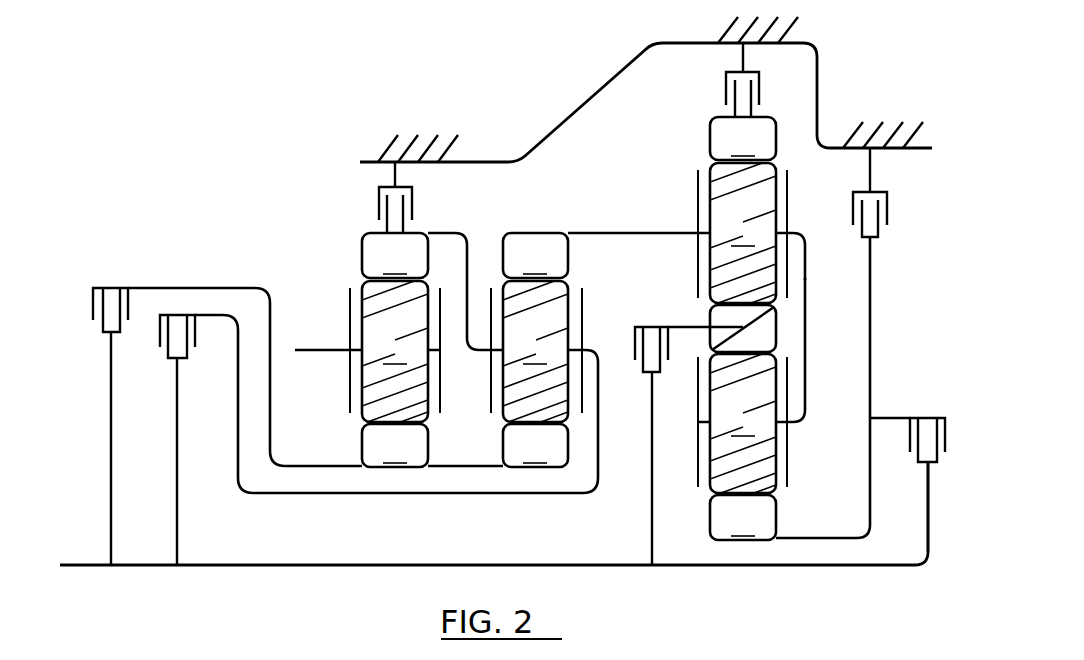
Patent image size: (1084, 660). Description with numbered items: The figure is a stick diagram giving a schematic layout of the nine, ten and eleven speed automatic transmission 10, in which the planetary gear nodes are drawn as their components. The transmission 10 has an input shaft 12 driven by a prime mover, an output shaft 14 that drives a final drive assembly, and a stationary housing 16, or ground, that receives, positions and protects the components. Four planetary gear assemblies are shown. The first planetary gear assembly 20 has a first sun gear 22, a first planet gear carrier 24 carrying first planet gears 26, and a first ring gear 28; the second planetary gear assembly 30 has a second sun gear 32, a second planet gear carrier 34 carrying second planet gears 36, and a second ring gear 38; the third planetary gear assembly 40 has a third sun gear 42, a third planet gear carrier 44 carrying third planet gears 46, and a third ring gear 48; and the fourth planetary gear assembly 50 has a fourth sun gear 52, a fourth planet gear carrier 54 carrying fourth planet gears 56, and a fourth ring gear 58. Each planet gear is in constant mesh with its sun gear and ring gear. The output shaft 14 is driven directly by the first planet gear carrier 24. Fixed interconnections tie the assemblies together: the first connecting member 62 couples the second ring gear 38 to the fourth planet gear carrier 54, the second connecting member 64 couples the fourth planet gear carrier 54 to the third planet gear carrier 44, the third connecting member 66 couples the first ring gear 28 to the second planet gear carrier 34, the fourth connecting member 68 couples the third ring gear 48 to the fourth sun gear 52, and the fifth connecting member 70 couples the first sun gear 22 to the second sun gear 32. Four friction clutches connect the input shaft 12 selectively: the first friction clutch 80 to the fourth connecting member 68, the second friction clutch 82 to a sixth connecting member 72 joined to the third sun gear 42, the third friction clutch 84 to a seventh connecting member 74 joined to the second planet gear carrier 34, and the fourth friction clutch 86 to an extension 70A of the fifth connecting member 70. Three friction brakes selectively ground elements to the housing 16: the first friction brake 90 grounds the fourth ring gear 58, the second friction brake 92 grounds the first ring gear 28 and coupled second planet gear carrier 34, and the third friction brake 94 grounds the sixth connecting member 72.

The automatic transmission 10 is at (226, 196).
The input shaft 12 is at (89, 569).
The output shaft 14 is at (309, 350).
The stationary housing 16 is at (590, 96).
The first planetary gear assembly 20 is at (386, 480).
The first sun gear 22 is at (395, 445).
The first planet gear carrier 24 is at (350, 396).
The first planet gears 26 is at (395, 356).
The first ring gear 28 is at (395, 255).
The second planetary gear assembly 30 is at (536, 480).
The second sun gear 32 is at (535, 445).
The second planet gear carrier 34 is at (584, 300).
The second planet gears 36 is at (535, 356).
The second ring gear 38 is at (535, 255).
The third planetary gear assembly 40 is at (736, 556).
The third sun gear 42 is at (743, 517).
The third planet gear carrier 44 is at (788, 470).
The third planet gears 46 is at (743, 429).
The third ring gear 48 is at (754, 342).
The fourth planetary gear assembly 50 is at (665, 180).
The fourth sun gear 52 is at (720, 318).
The fourth planet gear carrier 54 is at (788, 200).
The fourth planet gears 56 is at (743, 238).
The fourth ring gear 58 is at (743, 138).
The first connecting member 62 is at (585, 233).
The second connecting member 64 is at (807, 290).
The third connecting member 66 is at (468, 265).
The fourth connecting member 68 is at (754, 337).
The fifth connecting member 70 is at (462, 470).
The extension of the fifth connecting member 70A is at (208, 288).
The sixth connecting member 72 is at (871, 356).
The seventh connecting member 74 is at (320, 495).
The first friction clutch 80 is at (635, 346).
The second friction clutch 82 is at (910, 436).
The third friction clutch 84 is at (160, 330).
The fourth friction clutch 86 is at (93, 302).
The first friction brake 90 is at (726, 86).
The second friction brake 92 is at (379, 210).
The third friction brake 94 is at (888, 216).